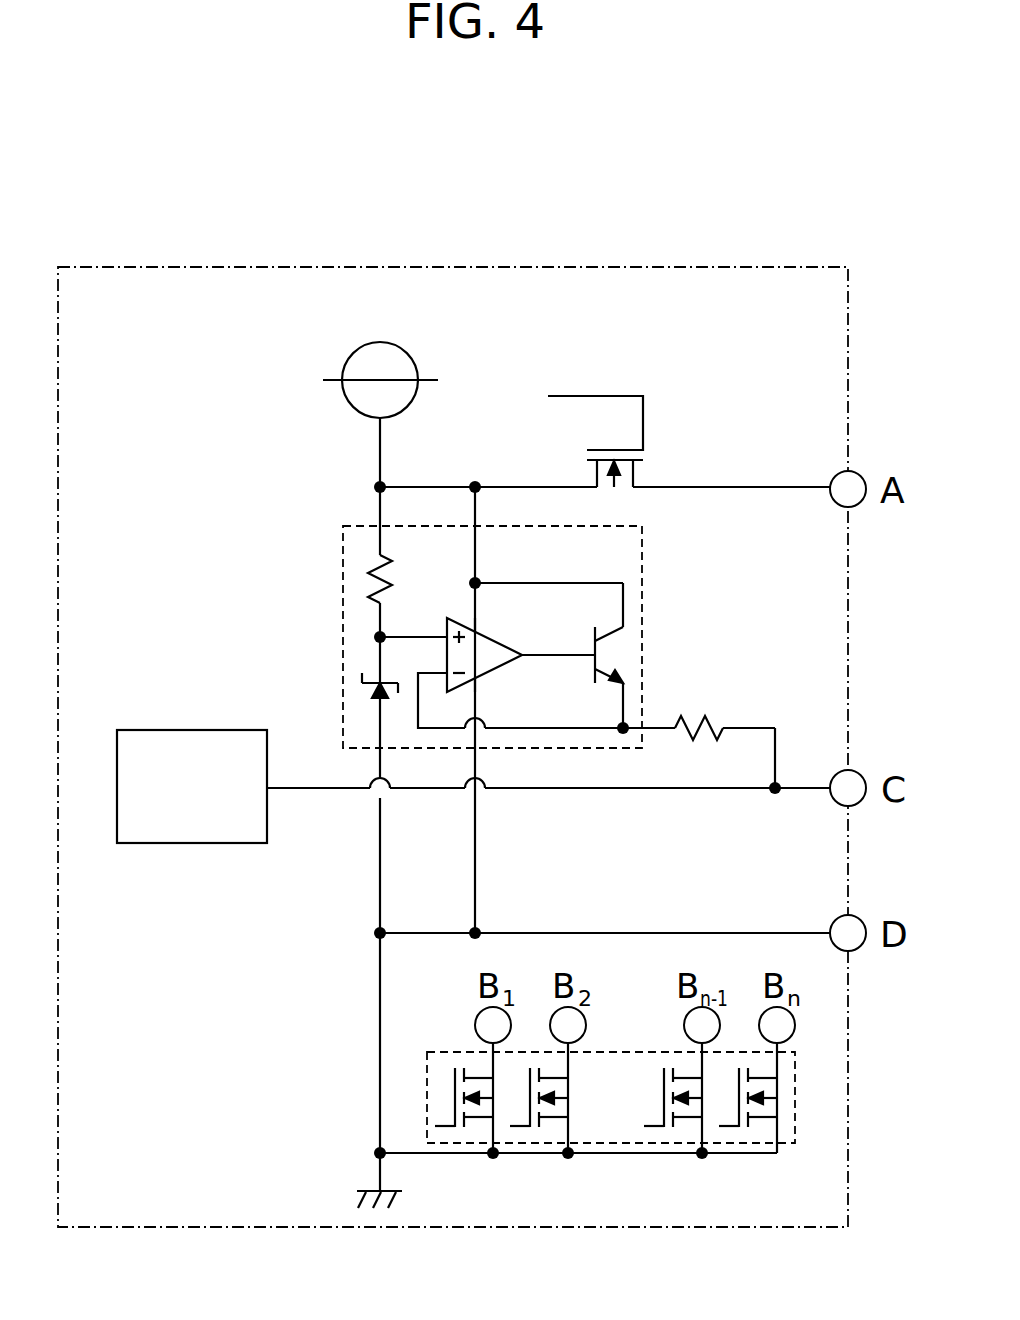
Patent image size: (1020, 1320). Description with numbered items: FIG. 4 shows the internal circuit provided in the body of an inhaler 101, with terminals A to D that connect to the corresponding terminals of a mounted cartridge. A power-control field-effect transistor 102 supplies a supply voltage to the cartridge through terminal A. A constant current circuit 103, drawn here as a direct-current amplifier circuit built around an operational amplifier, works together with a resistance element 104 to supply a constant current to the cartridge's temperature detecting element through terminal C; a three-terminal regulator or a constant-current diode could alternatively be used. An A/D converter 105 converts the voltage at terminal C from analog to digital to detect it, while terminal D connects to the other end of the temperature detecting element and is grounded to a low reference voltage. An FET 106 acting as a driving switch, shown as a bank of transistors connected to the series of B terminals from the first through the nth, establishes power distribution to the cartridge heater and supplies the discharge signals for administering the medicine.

The inhaler 101 is at (190, 267).
The power-control field-effect transistor 102 is at (603, 450).
The constant current circuit 103 is at (343, 572).
The resistance element 104 is at (698, 713).
The A/D converter 105 is at (188, 730).
The FET (driving switch) 106 is at (795, 1072).